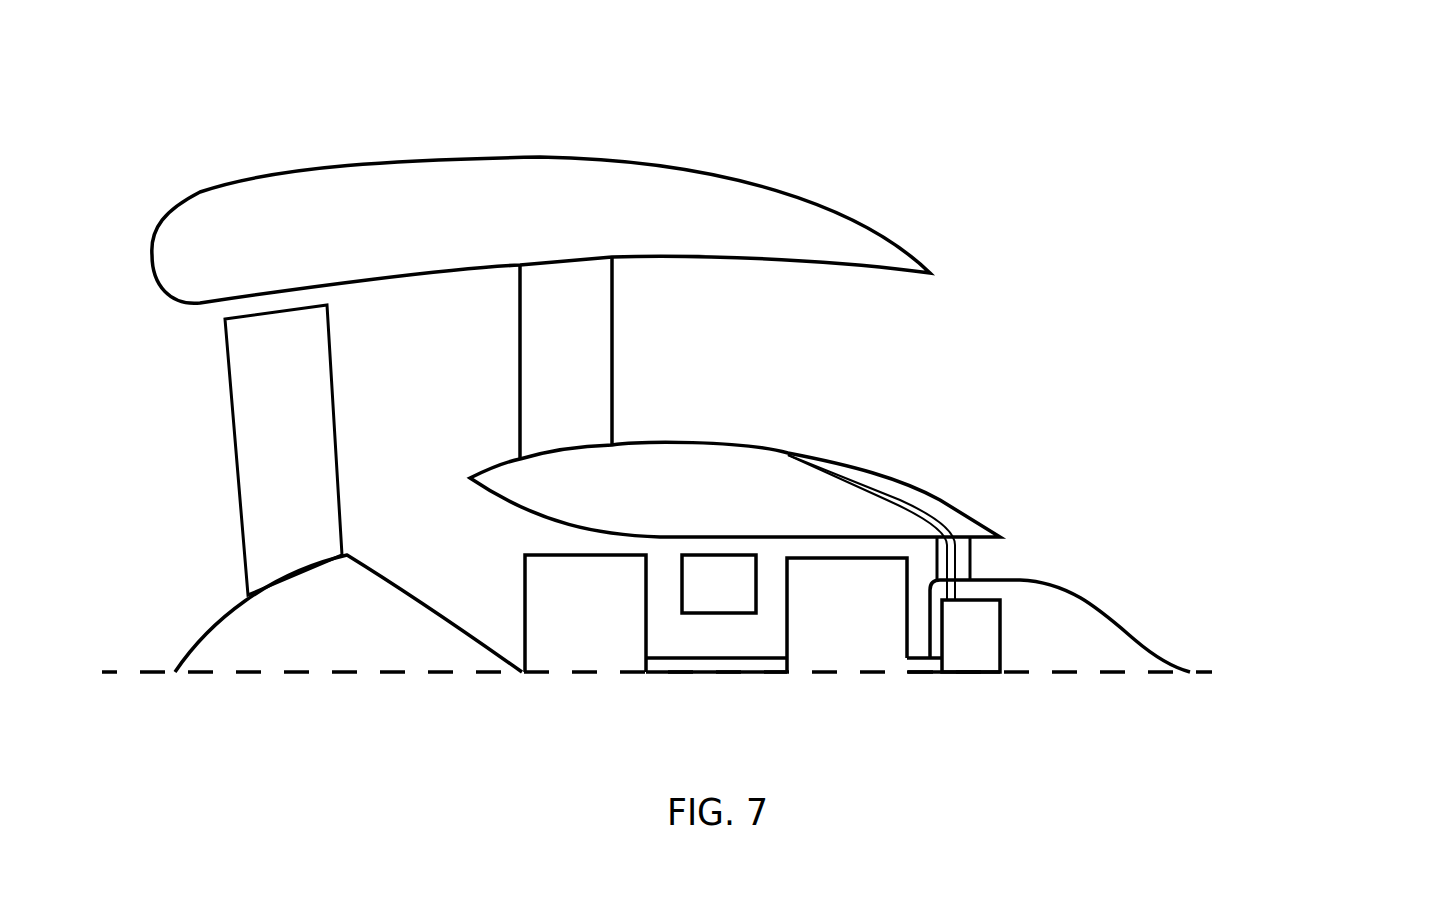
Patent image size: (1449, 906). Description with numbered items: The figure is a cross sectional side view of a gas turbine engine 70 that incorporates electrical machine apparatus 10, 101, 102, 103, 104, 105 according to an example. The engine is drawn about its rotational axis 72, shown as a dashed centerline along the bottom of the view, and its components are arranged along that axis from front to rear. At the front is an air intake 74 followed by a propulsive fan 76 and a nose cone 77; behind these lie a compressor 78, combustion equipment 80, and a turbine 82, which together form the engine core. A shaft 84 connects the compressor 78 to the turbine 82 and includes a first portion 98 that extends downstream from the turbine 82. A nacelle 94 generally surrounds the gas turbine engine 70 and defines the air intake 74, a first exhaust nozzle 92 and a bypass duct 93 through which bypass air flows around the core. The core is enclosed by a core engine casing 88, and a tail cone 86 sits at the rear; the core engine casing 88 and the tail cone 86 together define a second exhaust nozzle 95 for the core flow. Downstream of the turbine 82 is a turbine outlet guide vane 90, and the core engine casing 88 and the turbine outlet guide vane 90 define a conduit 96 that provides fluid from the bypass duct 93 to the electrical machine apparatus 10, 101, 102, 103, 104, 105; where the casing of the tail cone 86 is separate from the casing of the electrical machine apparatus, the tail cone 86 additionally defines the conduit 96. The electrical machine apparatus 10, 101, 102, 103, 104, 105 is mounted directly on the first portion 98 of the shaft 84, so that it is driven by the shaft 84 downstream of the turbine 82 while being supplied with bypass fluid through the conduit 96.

The gas turbine engine 70 is at (1121, 158).
The rotational axis 72 is at (350, 673).
The air intake 74 is at (169, 482).
The propulsive fan 76 is at (301, 441).
The nose cone 77 is at (361, 639).
The compressor 78 is at (604, 639).
The combustion equipment 80 is at (718, 583).
The turbine 82 is at (864, 639).
The shaft 84 is at (755, 665).
The tail cone 86 is at (1100, 636).
The core engine casing 88 is at (712, 502).
The turbine outlet guide vane 90 is at (962, 553).
The first exhaust nozzle 92 is at (917, 384).
The bypass duct 93 is at (764, 357).
The nacelle 94 is at (580, 181).
The second exhaust nozzle 95 is at (1060, 595).
The conduit 96 is at (888, 497).
The first portion 98 is at (940, 665).
The electrical machine apparatus 10 is at (1187, 668).
The electrical machine apparatus 101 is at (971, 636).
The electrical machine apparatus 102 is at (971, 636).
The electrical machine apparatus 103 is at (971, 636).
The electrical machine apparatus 104 is at (971, 636).
The electrical machine apparatus 105 is at (982, 635).